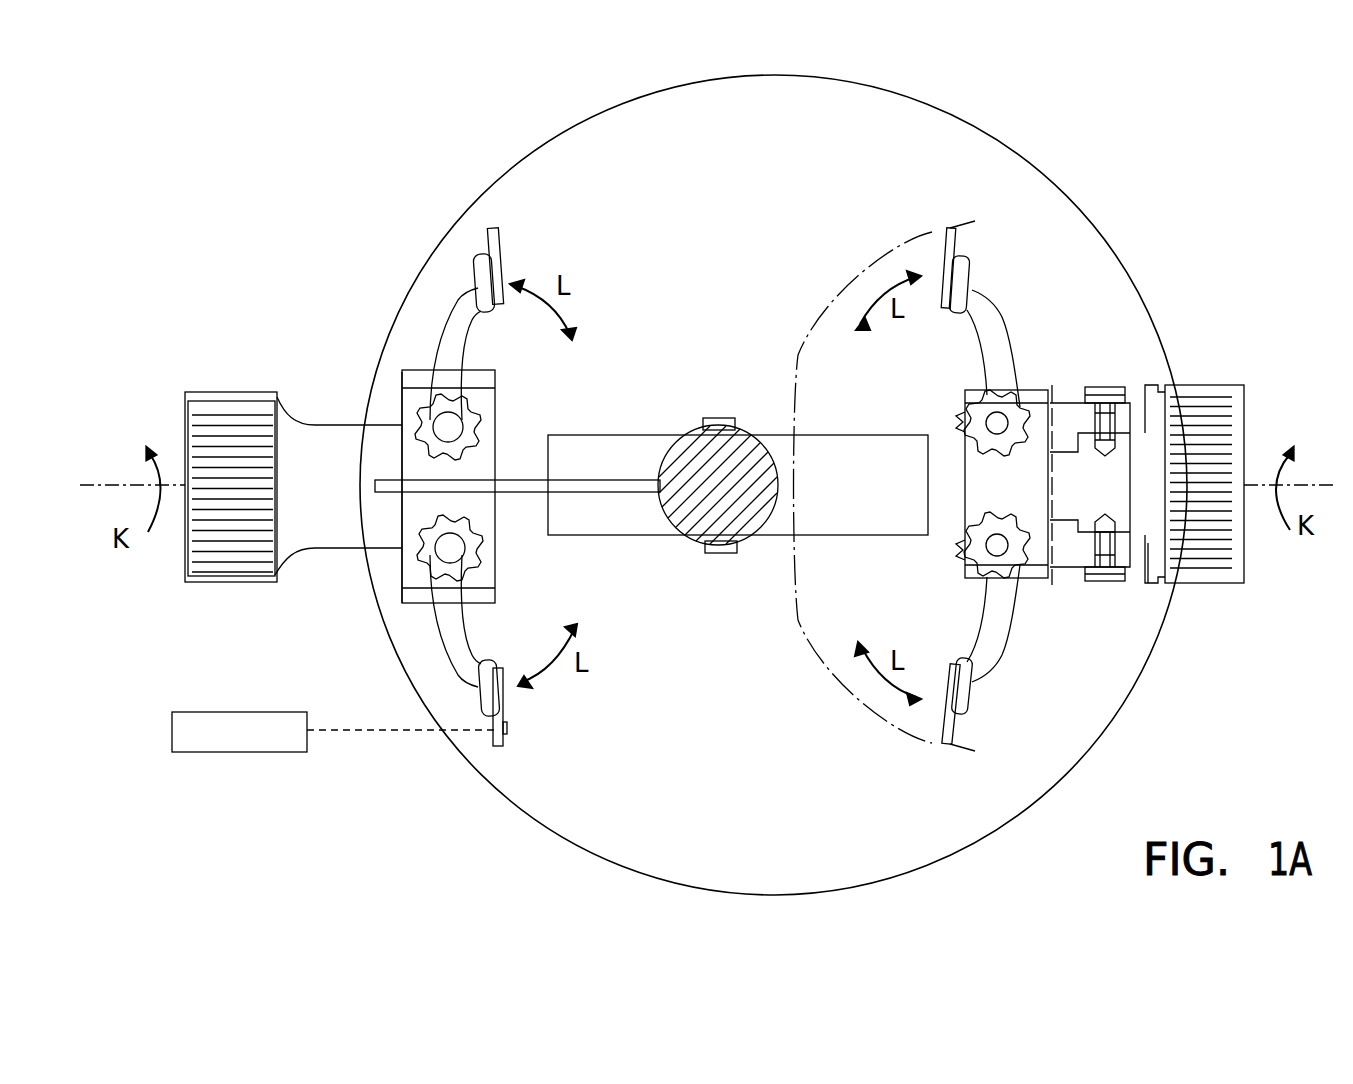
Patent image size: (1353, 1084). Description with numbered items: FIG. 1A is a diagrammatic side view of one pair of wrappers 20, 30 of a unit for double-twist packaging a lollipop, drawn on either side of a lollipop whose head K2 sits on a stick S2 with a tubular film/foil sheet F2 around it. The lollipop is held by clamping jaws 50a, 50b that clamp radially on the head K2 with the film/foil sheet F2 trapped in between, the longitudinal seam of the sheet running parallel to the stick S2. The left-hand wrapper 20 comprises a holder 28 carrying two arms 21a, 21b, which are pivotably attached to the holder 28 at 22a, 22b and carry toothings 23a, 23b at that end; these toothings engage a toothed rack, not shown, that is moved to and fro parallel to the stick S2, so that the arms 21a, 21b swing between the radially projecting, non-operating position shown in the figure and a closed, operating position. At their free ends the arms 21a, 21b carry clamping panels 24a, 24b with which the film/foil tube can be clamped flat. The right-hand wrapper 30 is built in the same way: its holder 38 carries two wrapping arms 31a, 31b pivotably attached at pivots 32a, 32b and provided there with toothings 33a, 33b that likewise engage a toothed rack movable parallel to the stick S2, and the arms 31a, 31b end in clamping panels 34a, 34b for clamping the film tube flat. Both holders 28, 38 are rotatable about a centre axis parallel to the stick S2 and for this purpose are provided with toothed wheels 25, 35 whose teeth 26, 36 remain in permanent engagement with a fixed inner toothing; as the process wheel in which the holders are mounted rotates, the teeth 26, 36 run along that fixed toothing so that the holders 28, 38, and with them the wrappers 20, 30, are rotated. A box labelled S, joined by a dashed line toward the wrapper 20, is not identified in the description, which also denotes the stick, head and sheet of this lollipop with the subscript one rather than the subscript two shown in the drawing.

The wrapper 20 is at (546, 268).
The arm 21a is at (455, 648).
The arm 21b is at (452, 338).
The pivot 22a is at (450, 548).
The pivot 22b is at (448, 427).
The toothing 23a is at (404, 540).
The toothing 23b is at (404, 440).
The clamping panel 24a is at (503, 710).
The clamping panel 24b is at (484, 260).
The toothed wheel 25 is at (242, 478).
The teeth 26 is at (190, 400).
The holder 28 is at (402, 505).
The wrapper 30 is at (1068, 318).
The wrapping arm 31a is at (1003, 636).
The wrapping arm 31b is at (1000, 350).
The pivot 32a is at (998, 546).
The pivot 32b is at (998, 423).
The toothing 33a is at (962, 553).
The toothing 33b is at (960, 422).
The clamping panel 34a is at (972, 718).
The clamping panel 34b is at (966, 243).
The toothed wheel 35 is at (1190, 500).
The teeth 36 is at (1210, 392).
The holder 38 is at (1038, 495).
The clamping jaw 50a is at (722, 554).
The clamping jaw 50b is at (720, 418).
The control unit S is at (172, 735).
The stick S2 is at (524, 492).
The lollipop head K2 is at (708, 506).
The film/foil sheet F2 is at (838, 508).